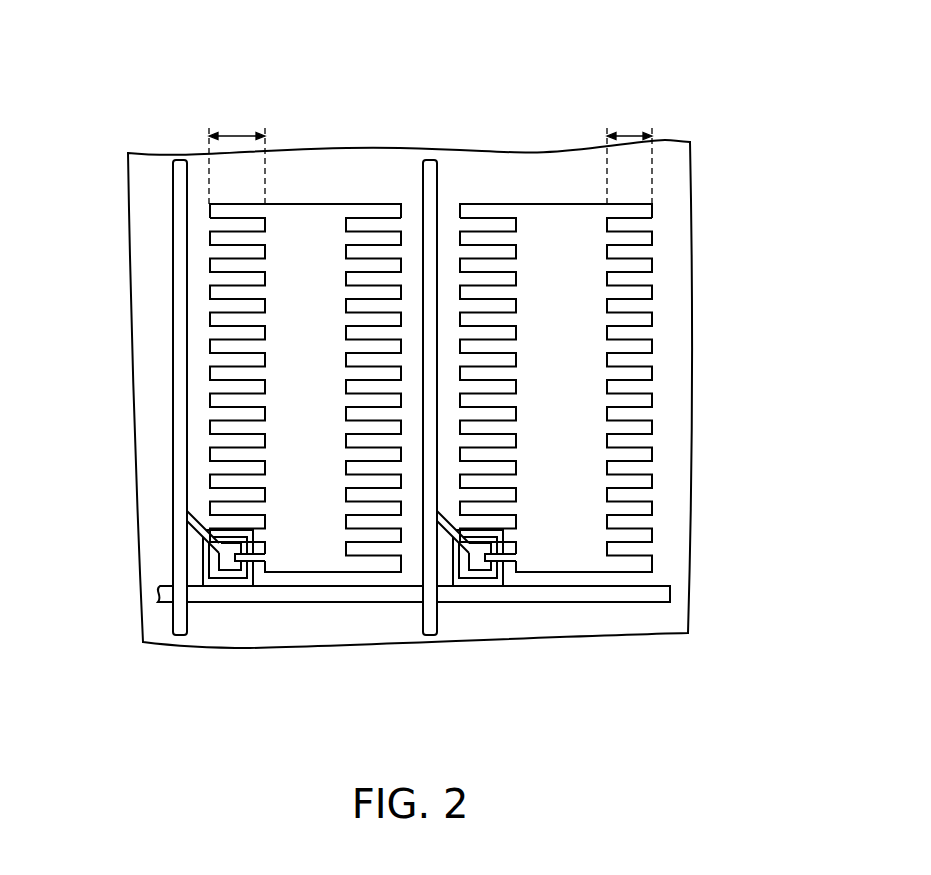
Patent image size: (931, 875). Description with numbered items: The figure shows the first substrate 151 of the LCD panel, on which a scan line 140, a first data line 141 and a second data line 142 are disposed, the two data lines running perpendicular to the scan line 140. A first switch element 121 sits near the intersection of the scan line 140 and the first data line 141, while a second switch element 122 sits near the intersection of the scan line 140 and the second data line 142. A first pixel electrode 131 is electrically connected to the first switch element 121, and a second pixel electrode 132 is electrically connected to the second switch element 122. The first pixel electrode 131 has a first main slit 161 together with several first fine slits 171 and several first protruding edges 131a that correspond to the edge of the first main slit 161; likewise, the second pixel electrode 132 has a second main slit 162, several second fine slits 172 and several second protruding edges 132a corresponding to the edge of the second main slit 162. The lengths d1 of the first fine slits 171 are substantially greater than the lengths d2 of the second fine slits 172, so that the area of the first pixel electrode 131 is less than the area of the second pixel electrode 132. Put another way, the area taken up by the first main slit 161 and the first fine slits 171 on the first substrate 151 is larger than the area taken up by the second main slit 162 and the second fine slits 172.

The first switch element 121 is at (221, 603).
The second switch element 122 is at (471, 603).
The first pixel electrode 131 is at (225, 398).
The first protruding edges 131a is at (195, 207).
The second pixel electrode 132 is at (623, 398).
The second protruding edges 132a is at (666, 207).
The scan line 140 is at (158, 596).
The first data line 141 is at (177, 158).
The second data line 142 is at (430, 158).
The first substrate 151 is at (688, 272).
The first main slit 161 is at (198, 306).
The second main slit 162 is at (450, 246).
The first fine slits 171 is at (200, 357).
The second fine slits 172 is at (659, 357).
The lengths of the first fine slits d1 is at (237, 153).
The lengths of the second fine slits d2 is at (629, 153).